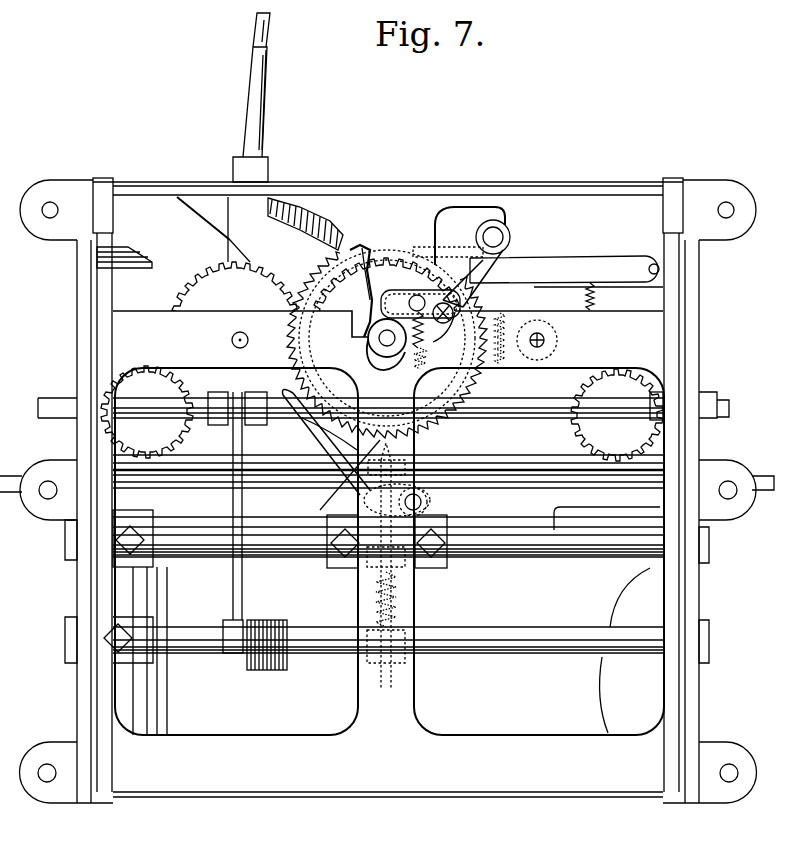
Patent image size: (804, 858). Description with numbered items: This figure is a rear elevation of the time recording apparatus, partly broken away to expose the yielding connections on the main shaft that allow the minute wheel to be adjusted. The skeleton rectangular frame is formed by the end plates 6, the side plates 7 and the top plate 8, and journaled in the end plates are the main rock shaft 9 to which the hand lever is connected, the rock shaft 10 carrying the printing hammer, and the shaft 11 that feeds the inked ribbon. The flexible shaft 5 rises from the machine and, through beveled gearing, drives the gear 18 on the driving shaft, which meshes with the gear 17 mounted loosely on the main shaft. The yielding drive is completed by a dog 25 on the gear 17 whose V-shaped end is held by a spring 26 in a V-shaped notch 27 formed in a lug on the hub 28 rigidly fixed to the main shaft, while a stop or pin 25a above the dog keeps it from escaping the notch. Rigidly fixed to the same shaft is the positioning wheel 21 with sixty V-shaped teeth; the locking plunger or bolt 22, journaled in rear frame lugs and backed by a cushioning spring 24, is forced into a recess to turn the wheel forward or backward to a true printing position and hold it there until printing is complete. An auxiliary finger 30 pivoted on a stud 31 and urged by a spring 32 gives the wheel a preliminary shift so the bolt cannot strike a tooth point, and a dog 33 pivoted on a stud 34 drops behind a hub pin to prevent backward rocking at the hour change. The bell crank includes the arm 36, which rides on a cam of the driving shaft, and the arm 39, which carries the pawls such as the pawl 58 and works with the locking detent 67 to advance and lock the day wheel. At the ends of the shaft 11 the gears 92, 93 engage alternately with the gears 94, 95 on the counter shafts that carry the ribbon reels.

The flexible shaft 5 is at (268, 92).
The end plates 6 is at (80, 296).
The side plates 7 is at (388, 768).
The top plate 8 is at (369, 190).
The main rock shaft 9 is at (497, 632).
The rock shaft 10 is at (594, 560).
The shaft 11 is at (511, 410).
The gear 17 is at (396, 258).
The gear 18 is at (207, 291).
The positioning wheel 21 is at (345, 402).
The locking plunger or bolt 22 is at (393, 531).
The cushioning spring 24 is at (397, 609).
The dog 25 is at (416, 296).
The stop or pin 25a is at (397, 283).
The spring 26 is at (433, 339).
The V-shaped notch 27 is at (374, 300).
The hub 28 is at (392, 358).
The auxiliary finger 30 is at (290, 428).
The stud 31 is at (422, 502).
The spring 32 is at (345, 496).
The dog 33 is at (515, 306).
The stud 34 is at (546, 340).
The arm of bell crank 36 is at (203, 211).
The arm of bell crank 39 is at (483, 262).
The pawl 58 is at (478, 232).
The locking detent 67 is at (563, 268).
The gear 92 is at (650, 420).
The gear 93 is at (90, 394).
The gear 94 is at (617, 377).
The gear 95 is at (165, 378).